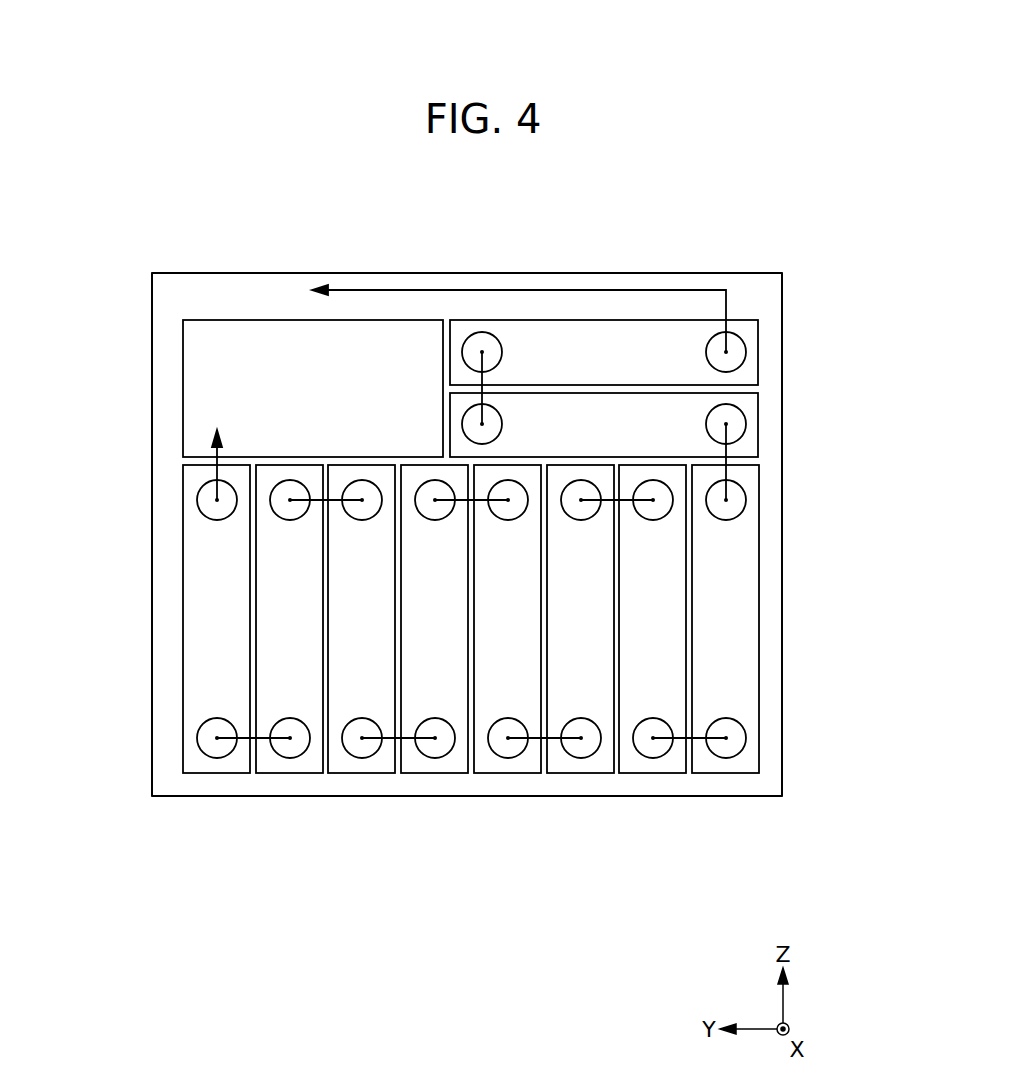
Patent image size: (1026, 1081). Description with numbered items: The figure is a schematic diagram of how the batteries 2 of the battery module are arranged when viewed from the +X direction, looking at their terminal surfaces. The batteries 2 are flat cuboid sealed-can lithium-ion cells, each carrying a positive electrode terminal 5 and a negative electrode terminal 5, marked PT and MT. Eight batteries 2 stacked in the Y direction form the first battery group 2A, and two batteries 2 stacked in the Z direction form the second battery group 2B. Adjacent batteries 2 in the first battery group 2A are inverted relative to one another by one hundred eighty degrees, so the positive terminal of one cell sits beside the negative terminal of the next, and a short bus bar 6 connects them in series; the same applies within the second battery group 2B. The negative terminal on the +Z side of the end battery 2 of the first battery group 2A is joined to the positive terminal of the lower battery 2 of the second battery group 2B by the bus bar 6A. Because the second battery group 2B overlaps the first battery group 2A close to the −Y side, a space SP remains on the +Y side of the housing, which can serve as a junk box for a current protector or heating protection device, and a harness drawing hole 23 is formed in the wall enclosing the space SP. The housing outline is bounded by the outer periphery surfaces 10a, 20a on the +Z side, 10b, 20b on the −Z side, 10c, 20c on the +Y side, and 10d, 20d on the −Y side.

The battery 2 is at (475, 619).
The first battery group 2A is at (475, 667).
The second battery group 2B is at (790, 322).
The electrode terminal 5 is at (481, 547).
The bus bar 6 is at (241, 741).
The bus bar 6A is at (717, 471).
The harness drawing hole 23 is at (152, 360).
The space SP is at (258, 330).
The outer periphery surface 10a is at (467, 230).
The outer periphery surface 20a is at (663, 273).
The outer periphery surface 10b is at (467, 833).
The outer periphery surface 20b is at (622, 796).
The outer periphery surface 10c is at (91, 534).
The outer periphery surface 20c is at (152, 508).
The outer periphery surface 10d is at (844, 534).
The outer periphery surface 20d is at (783, 548).